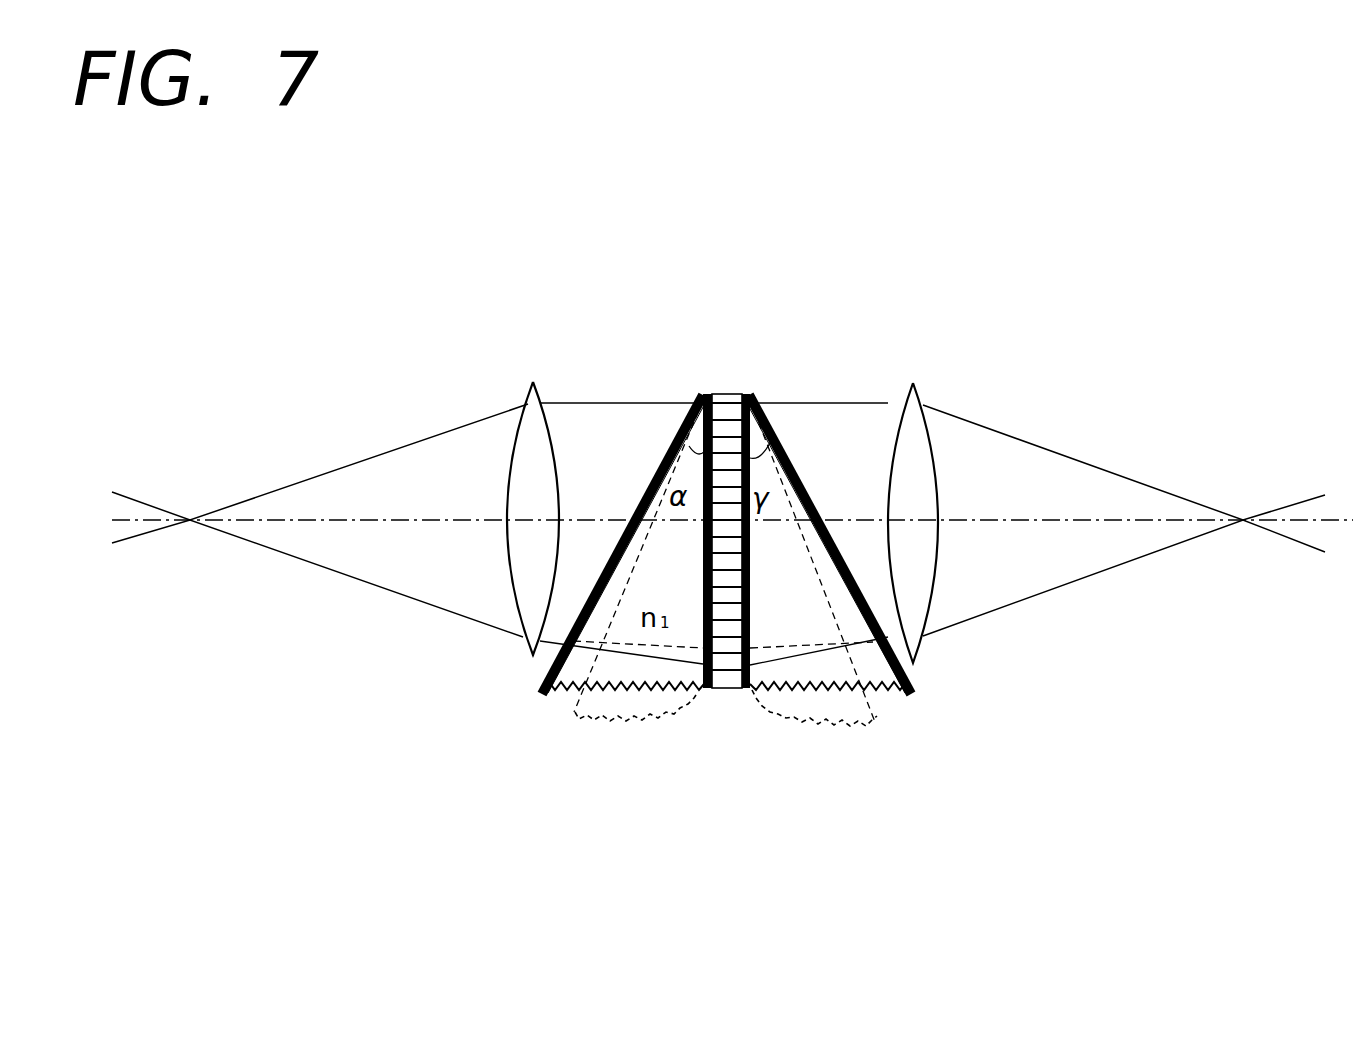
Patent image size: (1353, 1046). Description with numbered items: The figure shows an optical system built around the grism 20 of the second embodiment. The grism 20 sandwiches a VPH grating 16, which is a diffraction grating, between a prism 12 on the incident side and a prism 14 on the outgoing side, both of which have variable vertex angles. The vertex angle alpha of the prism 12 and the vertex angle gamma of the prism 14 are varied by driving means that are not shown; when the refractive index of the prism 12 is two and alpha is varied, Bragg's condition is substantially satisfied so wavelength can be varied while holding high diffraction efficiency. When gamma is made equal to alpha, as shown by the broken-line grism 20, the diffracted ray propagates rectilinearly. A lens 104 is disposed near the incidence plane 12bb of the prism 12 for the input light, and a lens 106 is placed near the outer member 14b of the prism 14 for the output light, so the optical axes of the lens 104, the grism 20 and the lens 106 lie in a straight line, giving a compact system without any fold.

The grism 20 is at (727, 523).
The VPH grating 16 is at (723, 400).
The prism 12 is at (647, 492).
The incidence plane 12bb is at (688, 440).
The prism 14 is at (812, 500).
The outer member 14b is at (792, 468).
The lens 104 is at (517, 563).
The lens 106 is at (928, 562).